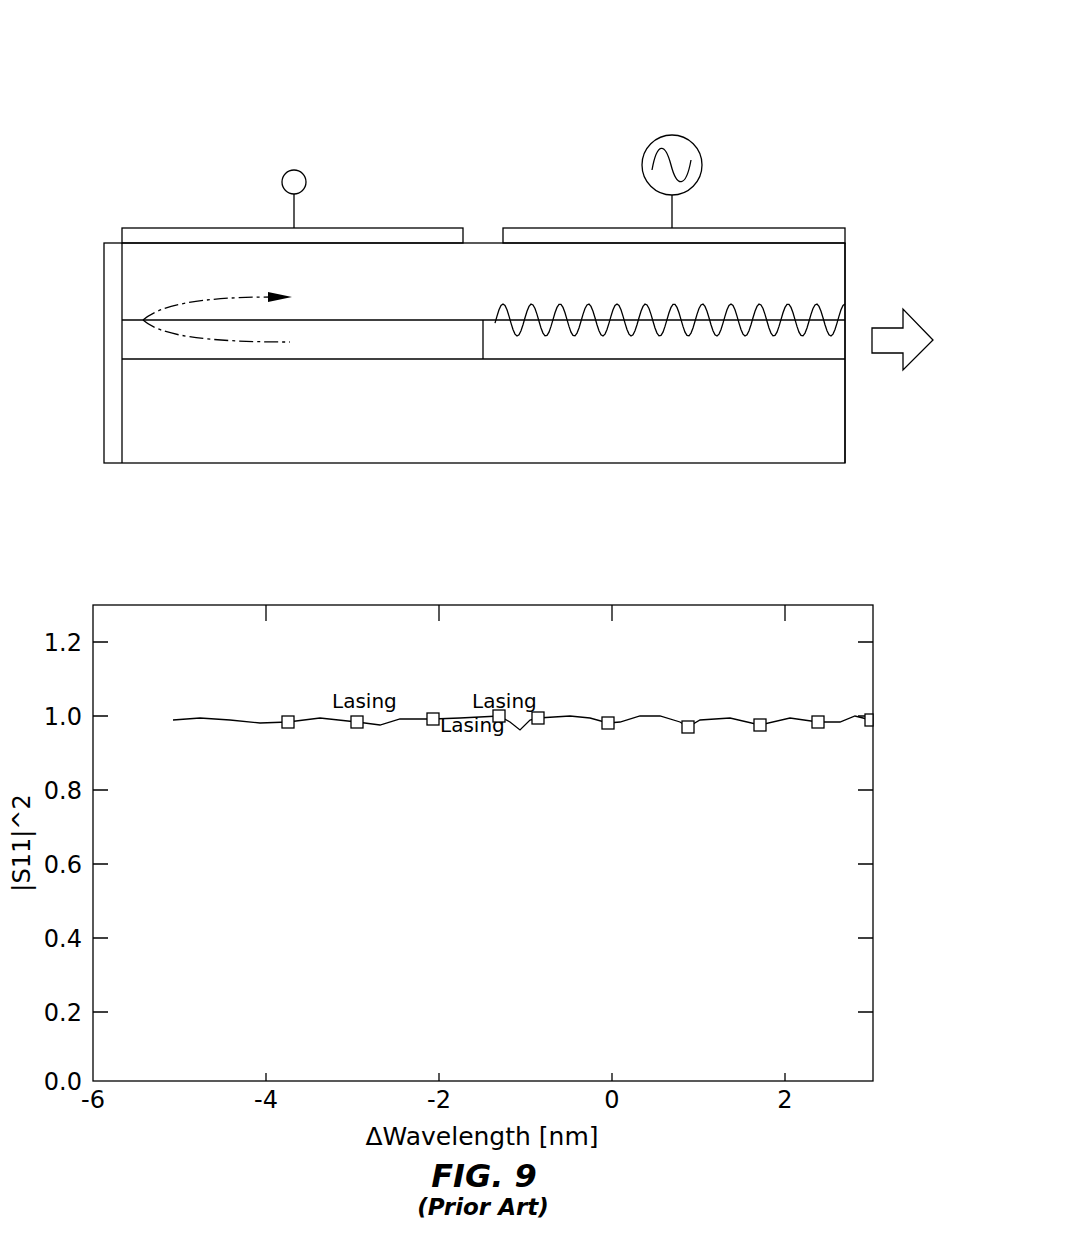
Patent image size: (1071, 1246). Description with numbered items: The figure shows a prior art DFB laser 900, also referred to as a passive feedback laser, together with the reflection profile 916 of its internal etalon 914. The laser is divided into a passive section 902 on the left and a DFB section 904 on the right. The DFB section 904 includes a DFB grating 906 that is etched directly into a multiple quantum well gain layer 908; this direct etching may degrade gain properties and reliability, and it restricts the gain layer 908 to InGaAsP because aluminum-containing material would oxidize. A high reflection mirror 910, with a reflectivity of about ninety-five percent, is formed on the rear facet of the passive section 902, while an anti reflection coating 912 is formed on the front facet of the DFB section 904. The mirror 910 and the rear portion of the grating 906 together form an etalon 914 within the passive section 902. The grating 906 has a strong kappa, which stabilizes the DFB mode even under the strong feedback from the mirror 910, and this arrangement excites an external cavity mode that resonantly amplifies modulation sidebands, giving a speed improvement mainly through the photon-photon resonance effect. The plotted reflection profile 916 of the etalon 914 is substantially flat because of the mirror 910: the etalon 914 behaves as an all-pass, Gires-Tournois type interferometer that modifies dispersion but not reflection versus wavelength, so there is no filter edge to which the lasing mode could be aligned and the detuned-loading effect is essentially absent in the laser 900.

The DFB laser 900 is at (845, 36).
The passive section 902 is at (463, 138).
The DFB section 904 is at (845, 138).
The DFB grating 906 is at (783, 308).
The multiple quantum well gain layer 908 is at (828, 360).
The high reflection mirror 910 is at (104, 285).
The anti reflection coating 912 is at (845, 291).
The etalon 914 is at (268, 430).
The reflection profile 916 is at (248, 720).